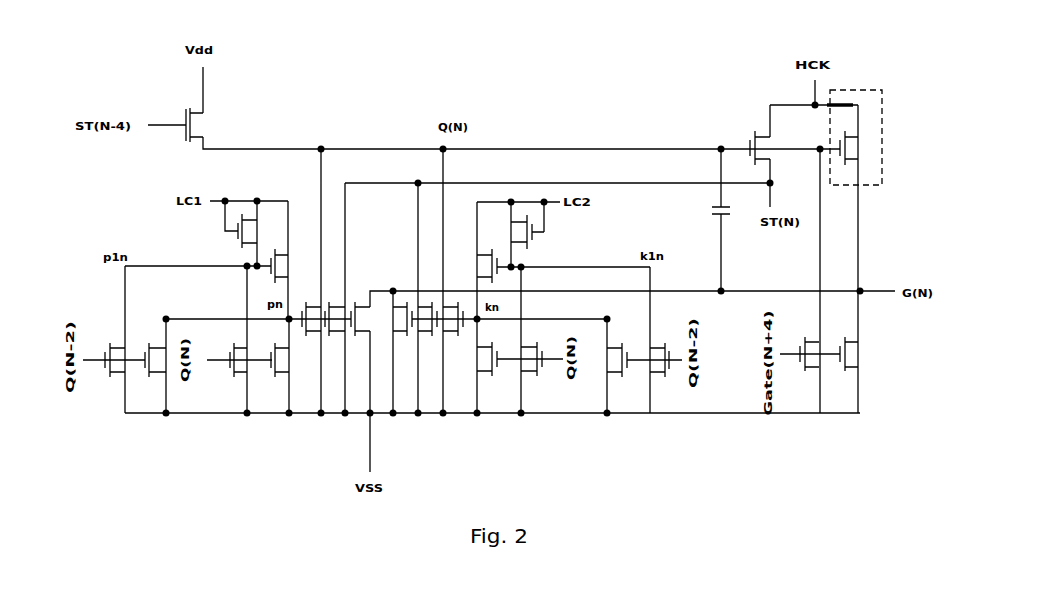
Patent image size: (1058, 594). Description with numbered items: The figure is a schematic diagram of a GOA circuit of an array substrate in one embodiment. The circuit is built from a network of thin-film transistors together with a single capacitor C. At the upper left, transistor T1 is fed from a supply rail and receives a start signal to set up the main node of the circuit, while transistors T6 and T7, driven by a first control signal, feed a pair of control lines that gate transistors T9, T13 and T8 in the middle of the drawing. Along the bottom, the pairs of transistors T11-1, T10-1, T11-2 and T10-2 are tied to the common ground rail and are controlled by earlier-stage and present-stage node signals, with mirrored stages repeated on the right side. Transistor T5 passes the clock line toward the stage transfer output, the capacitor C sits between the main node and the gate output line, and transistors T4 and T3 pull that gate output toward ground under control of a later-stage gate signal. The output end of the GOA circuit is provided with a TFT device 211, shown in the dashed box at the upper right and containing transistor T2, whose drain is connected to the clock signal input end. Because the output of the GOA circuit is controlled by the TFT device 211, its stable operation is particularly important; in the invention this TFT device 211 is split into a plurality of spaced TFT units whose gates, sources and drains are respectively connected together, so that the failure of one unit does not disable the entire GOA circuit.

The TFT device 211 is at (872, 123).
The first transistor T1 is at (187, 125).
The second transistor T2 is at (859, 148).
The third transistor T3 is at (860, 354).
The fourth transistor T4 is at (799, 344).
The fifth transistor T5 is at (757, 138).
The sixth transistor T6 is at (256, 231).
The seventh transistor T7 is at (288, 266).
The eighth transistor T8 is at (360, 308).
The ninth transistor T9 is at (311, 308).
The thirteenth transistor T13 is at (334, 308).
The transistor T11-1 is at (104, 367).
The transistor T10-1 is at (146, 367).
The transistor T11-2 is at (229, 367).
The transistor T10-2 is at (271, 367).
The capacitor C is at (727, 220).